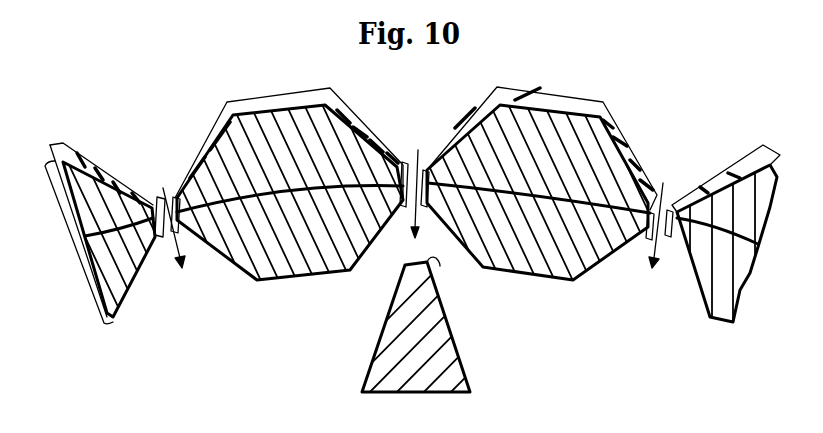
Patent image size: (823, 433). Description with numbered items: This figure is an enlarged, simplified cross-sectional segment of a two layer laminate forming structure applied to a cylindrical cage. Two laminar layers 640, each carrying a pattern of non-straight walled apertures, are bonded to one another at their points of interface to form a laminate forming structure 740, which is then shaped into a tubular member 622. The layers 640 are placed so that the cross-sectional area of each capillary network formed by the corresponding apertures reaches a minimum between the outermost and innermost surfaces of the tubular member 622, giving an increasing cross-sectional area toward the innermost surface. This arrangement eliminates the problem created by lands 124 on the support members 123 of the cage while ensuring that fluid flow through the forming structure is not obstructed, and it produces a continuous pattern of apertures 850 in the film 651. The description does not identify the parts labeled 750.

The tubular member 622 is at (142, 90).
The laminate forming structure 740 is at (69, 242).
The laminar layers 640 is at (98, 193).
The hexagonal coupling element 750 is at (202, 153).
The film 651 is at (568, 105).
The apertures 850 is at (168, 252).
The support members 123 is at (437, 361).
The lands 124 is at (438, 265).